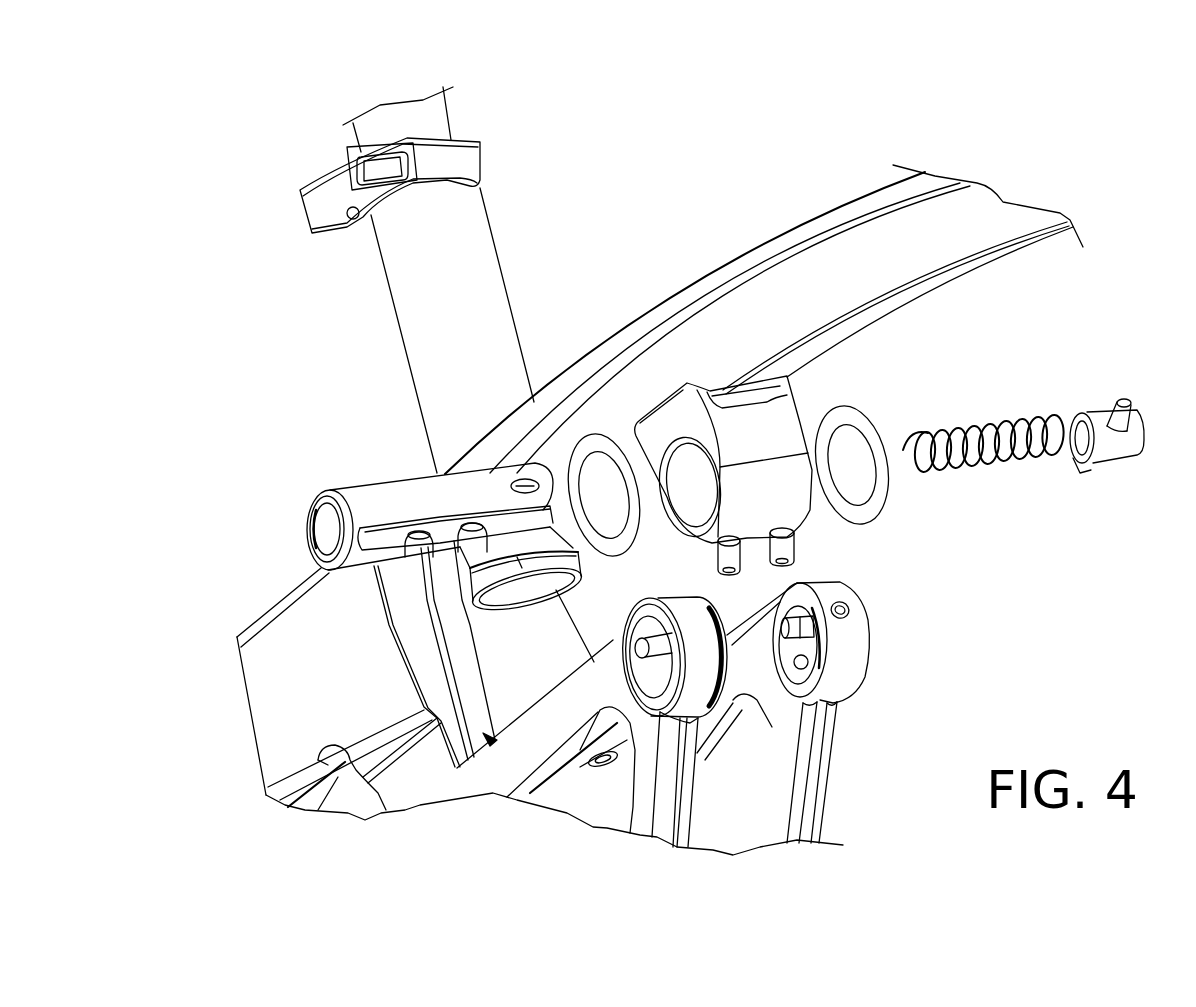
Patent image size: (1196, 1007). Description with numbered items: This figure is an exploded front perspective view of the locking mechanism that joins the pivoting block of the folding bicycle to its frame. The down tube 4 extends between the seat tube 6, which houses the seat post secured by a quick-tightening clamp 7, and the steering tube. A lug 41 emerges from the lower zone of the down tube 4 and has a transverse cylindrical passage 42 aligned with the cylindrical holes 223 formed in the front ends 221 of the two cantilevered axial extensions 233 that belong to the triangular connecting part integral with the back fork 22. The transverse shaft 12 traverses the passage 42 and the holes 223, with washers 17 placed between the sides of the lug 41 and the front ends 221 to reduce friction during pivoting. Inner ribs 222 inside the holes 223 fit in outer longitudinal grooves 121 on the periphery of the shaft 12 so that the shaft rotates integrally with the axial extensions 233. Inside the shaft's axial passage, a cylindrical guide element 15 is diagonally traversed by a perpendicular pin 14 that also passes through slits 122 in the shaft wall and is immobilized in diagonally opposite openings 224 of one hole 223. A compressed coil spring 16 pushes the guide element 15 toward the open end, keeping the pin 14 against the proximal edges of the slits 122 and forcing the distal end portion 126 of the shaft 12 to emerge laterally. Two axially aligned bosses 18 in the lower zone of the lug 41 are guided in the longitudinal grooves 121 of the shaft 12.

The down tube 4 is at (837, 223).
The seat tube 6 is at (473, 290).
The quick-tightening clamp 7 is at (460, 170).
The transverse shaft 12 is at (415, 438).
The perpendicular pin 14 is at (1115, 413).
The guide element 15 is at (1126, 415).
The coil spring 16 is at (970, 430).
The washers 17 is at (603, 447).
The bosses 18 is at (745, 566).
The back fork 22 is at (270, 653).
The lug 41 is at (782, 352).
The transverse cylindrical passage 42 is at (692, 493).
The outer longitudinal grooves 121 is at (380, 545).
The slits 122 is at (524, 484).
The distal end portion 126 is at (335, 523).
The front ends 221 is at (847, 652).
The inner ribs 222 is at (640, 647).
The cylindrical holes 223 is at (812, 648).
The openings 224 is at (852, 610).
The axial extensions 233 is at (530, 740).